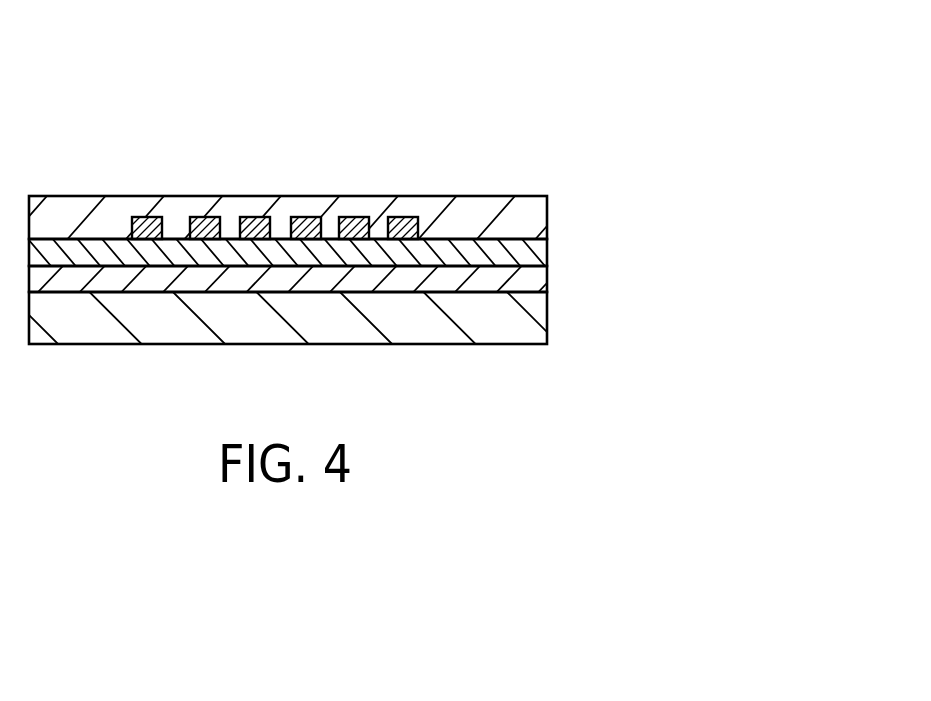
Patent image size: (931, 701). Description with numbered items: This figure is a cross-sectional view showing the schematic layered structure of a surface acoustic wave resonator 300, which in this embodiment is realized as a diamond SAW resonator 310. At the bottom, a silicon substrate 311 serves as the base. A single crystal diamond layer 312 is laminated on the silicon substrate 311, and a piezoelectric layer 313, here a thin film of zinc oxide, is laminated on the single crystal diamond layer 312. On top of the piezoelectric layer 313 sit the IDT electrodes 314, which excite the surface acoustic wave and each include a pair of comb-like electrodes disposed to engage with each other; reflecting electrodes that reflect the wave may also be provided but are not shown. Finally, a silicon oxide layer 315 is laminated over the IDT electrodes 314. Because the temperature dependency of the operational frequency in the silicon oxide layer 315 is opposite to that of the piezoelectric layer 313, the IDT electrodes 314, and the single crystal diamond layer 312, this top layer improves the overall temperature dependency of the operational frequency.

The surface acoustic wave resonator 300 is at (536, 81).
The diamond SAW resonator 310 is at (494, 163).
The silicon substrate 311 is at (538, 313).
The single crystal diamond layer 312 is at (538, 278).
The piezoelectric layer 313 is at (538, 245).
The IDT electrodes 314 is at (396, 216).
The silicon oxide layer 315 is at (538, 213).